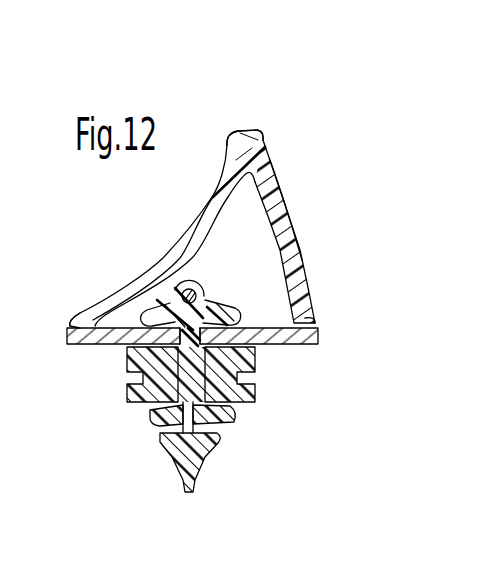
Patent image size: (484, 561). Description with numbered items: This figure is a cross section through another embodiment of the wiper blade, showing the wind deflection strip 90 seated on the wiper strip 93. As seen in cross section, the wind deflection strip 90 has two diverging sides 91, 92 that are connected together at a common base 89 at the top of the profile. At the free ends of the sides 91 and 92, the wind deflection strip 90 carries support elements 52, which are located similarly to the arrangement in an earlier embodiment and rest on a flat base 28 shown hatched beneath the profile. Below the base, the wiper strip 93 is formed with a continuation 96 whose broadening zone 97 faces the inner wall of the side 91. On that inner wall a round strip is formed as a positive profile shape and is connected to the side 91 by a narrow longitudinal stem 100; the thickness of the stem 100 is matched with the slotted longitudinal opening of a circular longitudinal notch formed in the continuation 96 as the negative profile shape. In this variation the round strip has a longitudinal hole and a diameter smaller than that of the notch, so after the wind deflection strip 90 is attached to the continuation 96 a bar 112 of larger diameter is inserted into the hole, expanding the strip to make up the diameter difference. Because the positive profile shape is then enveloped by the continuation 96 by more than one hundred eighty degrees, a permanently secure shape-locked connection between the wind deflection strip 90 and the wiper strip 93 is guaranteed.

The common base 89 is at (255, 140).
The wind deflection strip 90 is at (293, 207).
The side 91 is at (197, 223).
The side 92 is at (291, 229).
The broadening zone 97 is at (225, 305).
The longitudinal stem 100 is at (199, 268).
The support element 52 is at (67, 330).
The flange 28 is at (103, 341).
The bar 112 is at (166, 345).
The continuation 96 is at (253, 373).
The wiper strip 93 is at (156, 431).